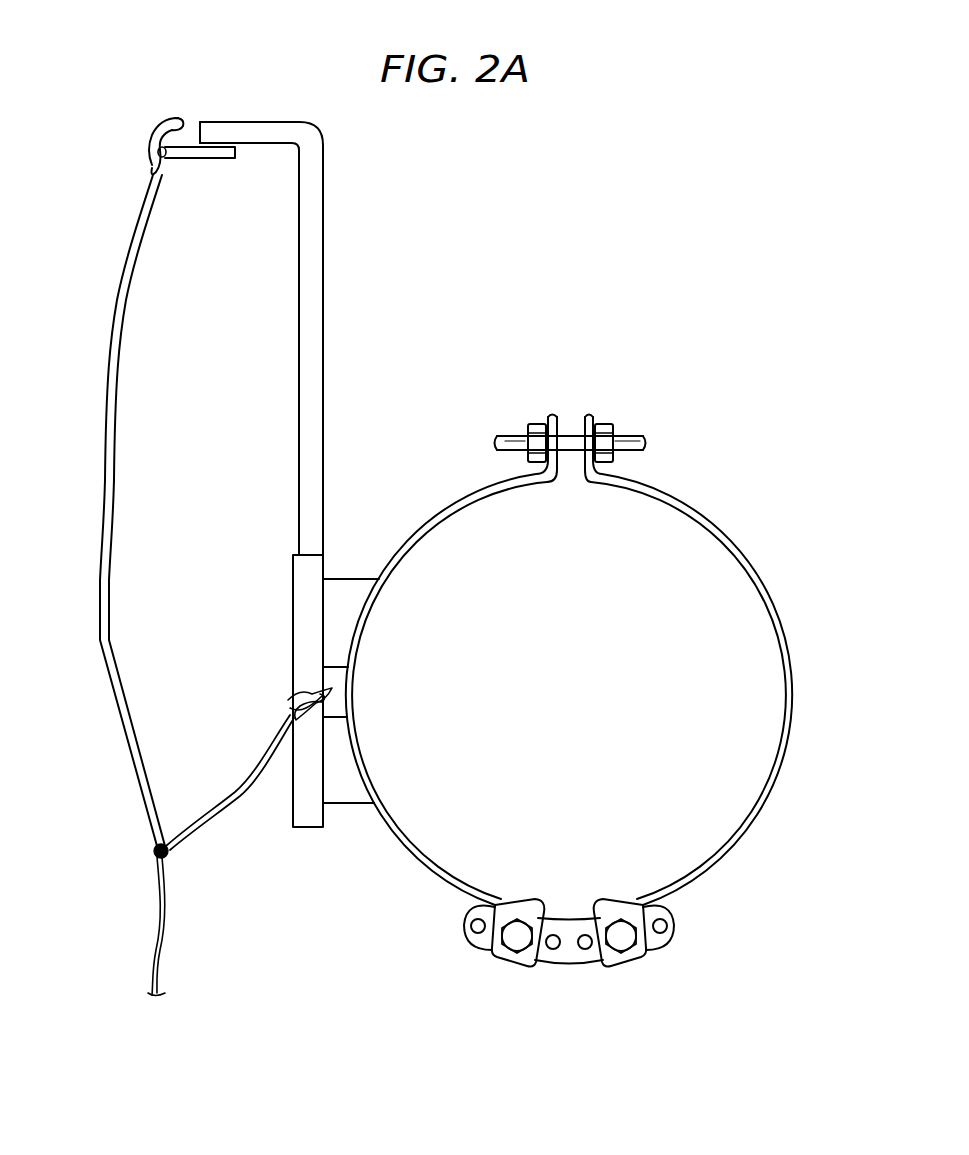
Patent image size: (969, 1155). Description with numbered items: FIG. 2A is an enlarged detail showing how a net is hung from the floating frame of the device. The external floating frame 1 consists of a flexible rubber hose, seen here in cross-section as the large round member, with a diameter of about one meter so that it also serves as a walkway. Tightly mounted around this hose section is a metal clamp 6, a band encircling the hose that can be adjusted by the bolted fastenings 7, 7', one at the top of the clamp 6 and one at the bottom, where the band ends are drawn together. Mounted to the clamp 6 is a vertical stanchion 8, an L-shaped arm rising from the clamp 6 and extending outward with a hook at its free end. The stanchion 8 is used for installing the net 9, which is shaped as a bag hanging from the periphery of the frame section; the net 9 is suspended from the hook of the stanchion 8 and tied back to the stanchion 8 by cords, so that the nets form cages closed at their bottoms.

The external floating frame 1 is at (785, 757).
The metal clamp 6 is at (772, 597).
The clamp adjustment 7 is at (609, 973).
The clamp adjustment 7' is at (570, 386).
The vertical stanchion 8 is at (316, 403).
The net 9 is at (102, 538).